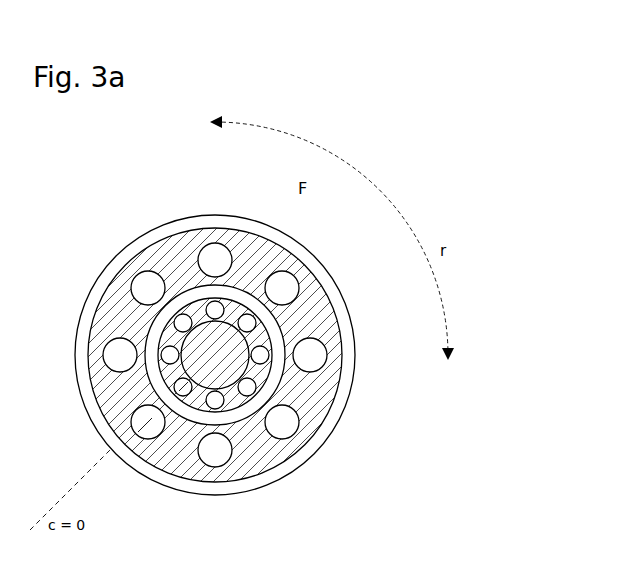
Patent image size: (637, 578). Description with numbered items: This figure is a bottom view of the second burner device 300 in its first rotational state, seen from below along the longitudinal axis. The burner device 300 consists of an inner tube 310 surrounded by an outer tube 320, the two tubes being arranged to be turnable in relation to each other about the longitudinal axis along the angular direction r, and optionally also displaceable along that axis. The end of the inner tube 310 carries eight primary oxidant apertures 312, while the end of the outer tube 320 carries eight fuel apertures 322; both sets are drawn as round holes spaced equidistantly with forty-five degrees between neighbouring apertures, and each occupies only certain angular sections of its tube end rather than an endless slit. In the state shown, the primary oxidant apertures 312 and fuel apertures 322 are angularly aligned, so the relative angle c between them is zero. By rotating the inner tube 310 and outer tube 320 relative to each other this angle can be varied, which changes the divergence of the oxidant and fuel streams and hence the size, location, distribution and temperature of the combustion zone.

The burner device 300 is at (443, 208).
The inner tube 310 is at (272, 395).
The primary oxidant apertures 312 is at (250, 392).
The outer tube 320 is at (307, 438).
The fuel apertures 322 is at (267, 380).